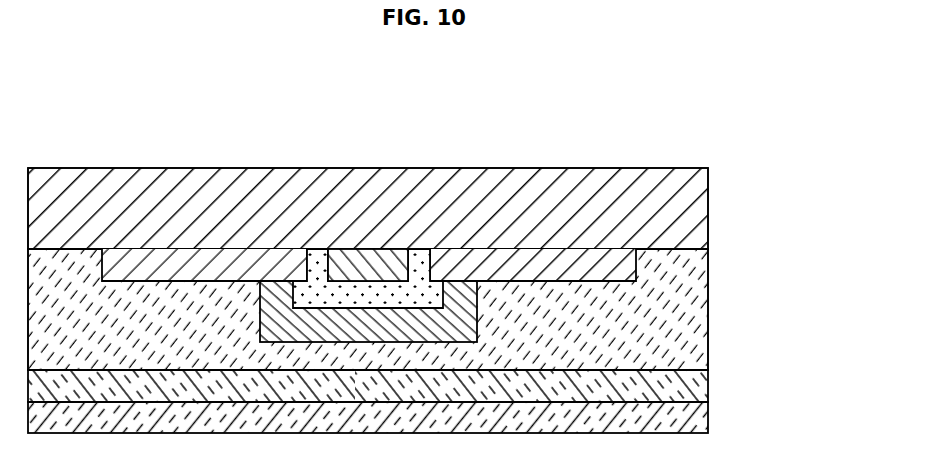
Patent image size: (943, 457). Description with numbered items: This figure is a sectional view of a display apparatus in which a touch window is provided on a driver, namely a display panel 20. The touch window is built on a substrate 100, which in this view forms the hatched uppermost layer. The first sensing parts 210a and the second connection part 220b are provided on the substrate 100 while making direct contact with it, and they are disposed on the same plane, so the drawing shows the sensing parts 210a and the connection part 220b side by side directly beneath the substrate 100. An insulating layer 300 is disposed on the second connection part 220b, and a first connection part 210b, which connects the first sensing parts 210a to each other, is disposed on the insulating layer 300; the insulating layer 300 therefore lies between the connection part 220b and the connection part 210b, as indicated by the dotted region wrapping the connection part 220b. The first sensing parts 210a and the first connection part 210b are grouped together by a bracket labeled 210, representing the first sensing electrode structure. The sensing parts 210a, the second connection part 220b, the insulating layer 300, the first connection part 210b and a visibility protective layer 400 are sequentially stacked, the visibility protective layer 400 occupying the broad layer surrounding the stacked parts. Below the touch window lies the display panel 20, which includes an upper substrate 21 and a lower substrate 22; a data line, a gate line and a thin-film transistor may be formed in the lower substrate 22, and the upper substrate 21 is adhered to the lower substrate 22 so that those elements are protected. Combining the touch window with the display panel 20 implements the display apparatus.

The substrate 100 is at (705, 208).
The visibility protective layer 400 is at (705, 306).
The display panel 20 is at (425, 403).
The upper substrate 21 is at (705, 385).
The lower substrate 22 is at (705, 424).
The electrode 210 is at (369, 207).
The first sensing part 210a is at (547, 265).
The first connection part 210b is at (482, 292).
The second connection part 220b is at (368, 257).
The insulating layer 300 is at (320, 255).